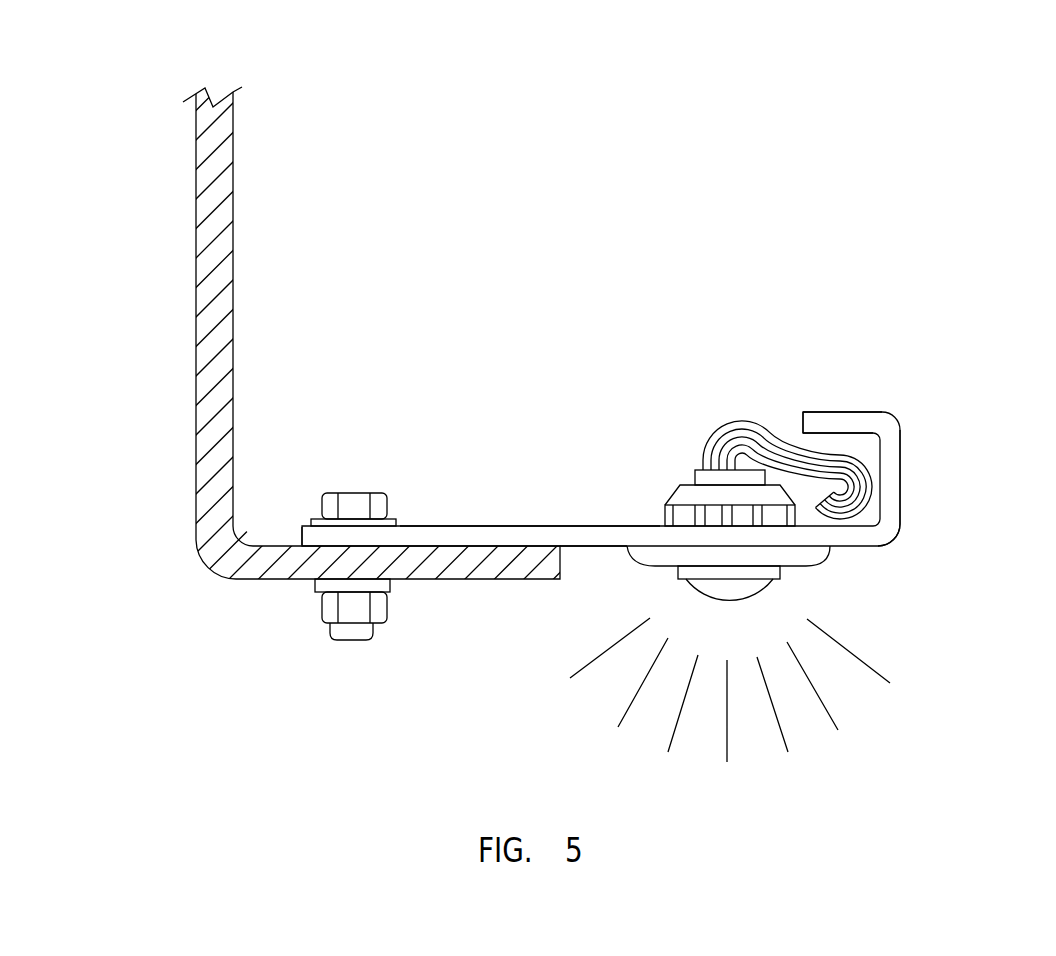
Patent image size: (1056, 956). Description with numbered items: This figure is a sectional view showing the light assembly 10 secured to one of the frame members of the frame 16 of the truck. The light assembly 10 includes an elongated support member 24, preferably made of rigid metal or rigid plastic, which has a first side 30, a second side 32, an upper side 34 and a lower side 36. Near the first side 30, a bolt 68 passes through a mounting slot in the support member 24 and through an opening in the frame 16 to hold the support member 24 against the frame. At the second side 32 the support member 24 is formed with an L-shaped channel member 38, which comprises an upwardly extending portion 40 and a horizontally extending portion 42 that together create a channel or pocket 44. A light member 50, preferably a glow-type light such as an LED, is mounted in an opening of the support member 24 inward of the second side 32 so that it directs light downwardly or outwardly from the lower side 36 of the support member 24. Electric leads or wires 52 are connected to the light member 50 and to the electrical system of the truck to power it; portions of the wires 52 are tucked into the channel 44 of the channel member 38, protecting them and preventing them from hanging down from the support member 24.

The light assembly 10 is at (850, 365).
The frame 16 is at (232, 388).
The elongated support member 24 is at (602, 516).
The first side 30 is at (302, 535).
The second side 32 is at (893, 527).
The upper side 34 is at (532, 527).
The lower side 36 is at (590, 546).
The L-shaped channel member 38 is at (915, 447).
The upwardly extending portion 40 is at (900, 490).
The horizontally extending portion 42 is at (865, 412).
The channel or pocket 44 is at (872, 462).
The light member 50 is at (648, 569).
The electric leads or wires 52 is at (737, 430).
The bolt 68 is at (375, 493).